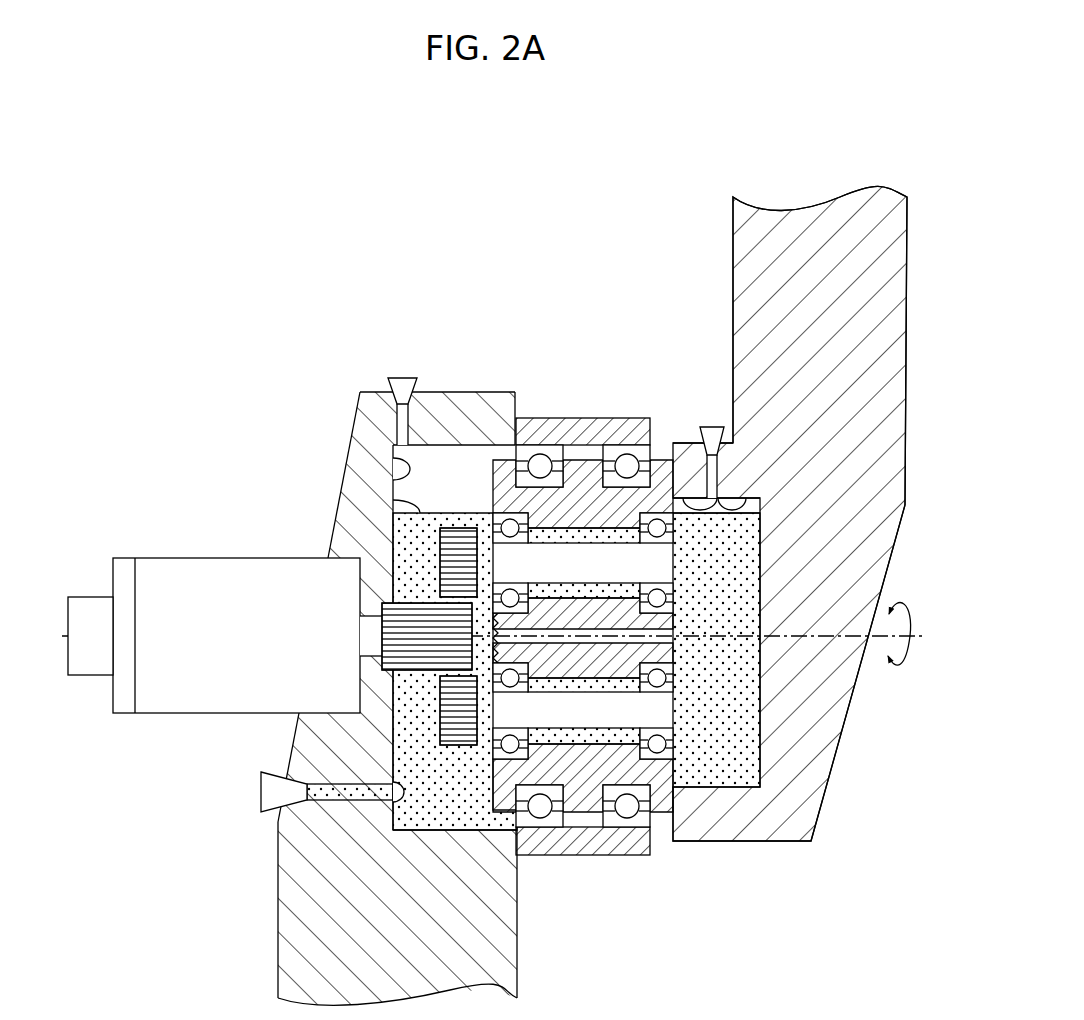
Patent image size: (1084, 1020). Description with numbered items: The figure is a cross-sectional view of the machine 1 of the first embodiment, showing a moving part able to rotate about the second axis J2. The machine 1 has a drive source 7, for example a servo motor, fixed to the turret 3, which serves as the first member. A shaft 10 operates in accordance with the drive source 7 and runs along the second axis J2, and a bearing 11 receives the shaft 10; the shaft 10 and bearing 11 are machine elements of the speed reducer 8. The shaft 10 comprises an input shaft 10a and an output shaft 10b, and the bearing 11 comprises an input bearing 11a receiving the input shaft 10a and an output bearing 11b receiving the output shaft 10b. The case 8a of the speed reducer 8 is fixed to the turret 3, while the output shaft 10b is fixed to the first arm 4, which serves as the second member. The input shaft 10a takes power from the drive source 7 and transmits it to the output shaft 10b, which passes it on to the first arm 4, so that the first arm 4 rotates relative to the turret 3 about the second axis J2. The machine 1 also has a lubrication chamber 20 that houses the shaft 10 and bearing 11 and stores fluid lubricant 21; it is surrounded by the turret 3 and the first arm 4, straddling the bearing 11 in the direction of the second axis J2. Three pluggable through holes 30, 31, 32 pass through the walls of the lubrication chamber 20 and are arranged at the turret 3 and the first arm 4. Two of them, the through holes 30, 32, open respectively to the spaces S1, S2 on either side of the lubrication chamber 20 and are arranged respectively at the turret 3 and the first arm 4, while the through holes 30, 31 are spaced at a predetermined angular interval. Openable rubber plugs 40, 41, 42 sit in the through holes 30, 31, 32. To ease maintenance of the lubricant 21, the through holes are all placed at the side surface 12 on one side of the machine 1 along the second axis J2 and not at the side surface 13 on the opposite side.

The machine 1 is at (268, 278).
The turret 3 is at (288, 922).
The first arm 4 is at (748, 243).
The drive source 7 is at (203, 590).
The speed reducer 8 is at (682, 720).
The case 8a is at (612, 418).
The shaft 10 is at (583, 501).
The input shaft 10a is at (575, 470).
The output shaft 10b is at (563, 560).
The bearing 11 is at (586, 893).
The input bearing 11a is at (545, 828).
The output bearing 11b is at (600, 826).
The side surface 12 is at (206, 367).
The side surface 13 is at (848, 812).
The lubrication chamber 20 is at (410, 460).
The lubricant 21 is at (395, 500).
The through hole 30 is at (422, 446).
The through hole 31 is at (397, 815).
The through hole 32 is at (683, 498).
The plug 40 is at (402, 378).
The plug 41 is at (262, 792).
The plug 42 is at (712, 427).
The space S1 is at (448, 818).
The space S2 is at (715, 782).
The second axis J2 is at (882, 640).